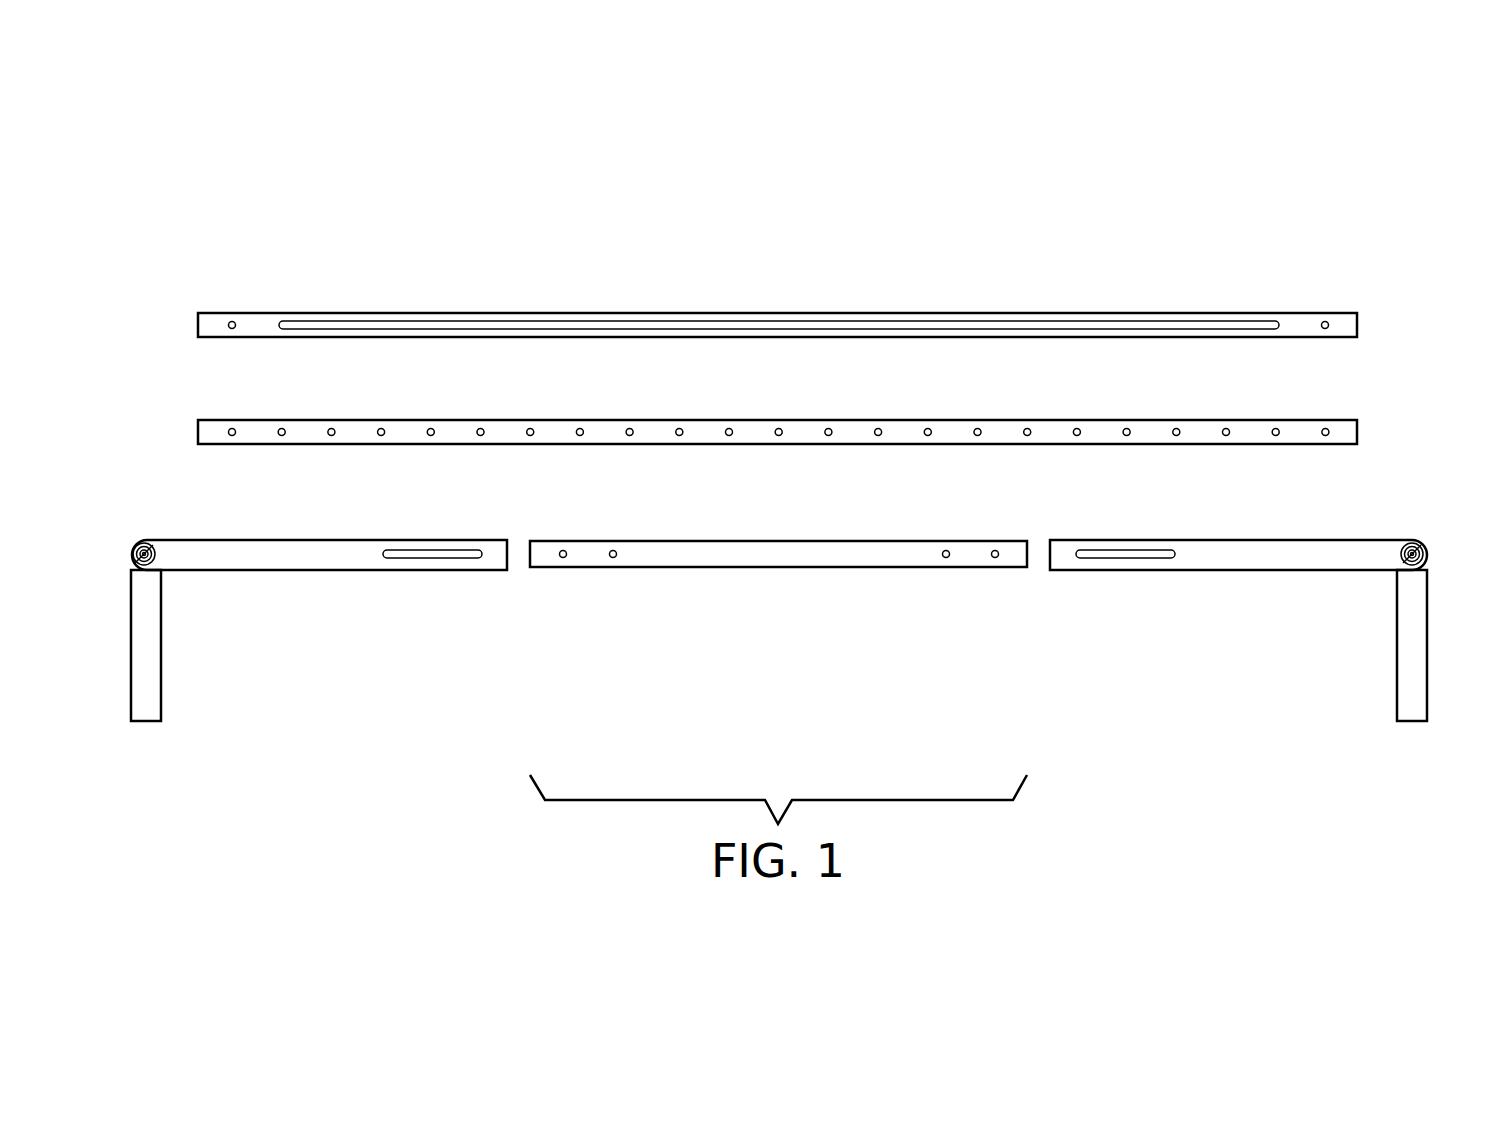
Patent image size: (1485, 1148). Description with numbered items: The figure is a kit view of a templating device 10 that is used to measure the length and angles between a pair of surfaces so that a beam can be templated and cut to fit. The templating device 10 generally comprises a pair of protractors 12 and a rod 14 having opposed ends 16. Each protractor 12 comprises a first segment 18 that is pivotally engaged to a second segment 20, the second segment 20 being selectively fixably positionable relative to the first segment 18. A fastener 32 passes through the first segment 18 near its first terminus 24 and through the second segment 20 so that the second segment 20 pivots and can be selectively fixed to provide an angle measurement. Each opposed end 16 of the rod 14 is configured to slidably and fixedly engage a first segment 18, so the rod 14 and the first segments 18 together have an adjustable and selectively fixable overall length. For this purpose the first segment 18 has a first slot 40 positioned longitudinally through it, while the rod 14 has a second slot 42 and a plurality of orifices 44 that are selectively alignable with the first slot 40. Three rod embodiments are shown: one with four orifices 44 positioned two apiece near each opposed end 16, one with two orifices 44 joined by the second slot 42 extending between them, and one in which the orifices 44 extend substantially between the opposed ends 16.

The templating device 10 is at (1017, 208).
The protractor 12 is at (784, 584).
The rod 14 is at (777, 465).
The opposed ends 16 is at (777, 364).
The first segment 18 is at (319, 608).
The second segment 20 is at (153, 614).
The first terminus 24 is at (1058, 562).
The fastener 32 is at (142, 538).
The first slot 40 is at (433, 561).
The second slot 42 is at (749, 325).
The orifices 44 is at (240, 324).